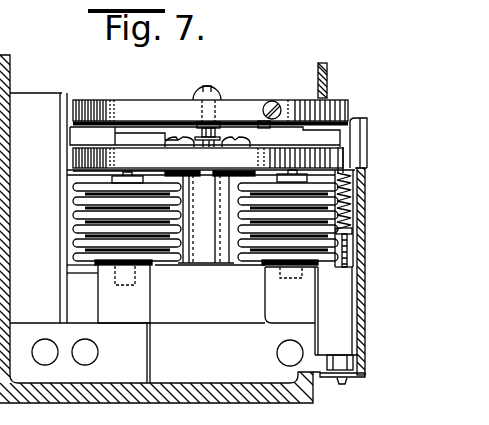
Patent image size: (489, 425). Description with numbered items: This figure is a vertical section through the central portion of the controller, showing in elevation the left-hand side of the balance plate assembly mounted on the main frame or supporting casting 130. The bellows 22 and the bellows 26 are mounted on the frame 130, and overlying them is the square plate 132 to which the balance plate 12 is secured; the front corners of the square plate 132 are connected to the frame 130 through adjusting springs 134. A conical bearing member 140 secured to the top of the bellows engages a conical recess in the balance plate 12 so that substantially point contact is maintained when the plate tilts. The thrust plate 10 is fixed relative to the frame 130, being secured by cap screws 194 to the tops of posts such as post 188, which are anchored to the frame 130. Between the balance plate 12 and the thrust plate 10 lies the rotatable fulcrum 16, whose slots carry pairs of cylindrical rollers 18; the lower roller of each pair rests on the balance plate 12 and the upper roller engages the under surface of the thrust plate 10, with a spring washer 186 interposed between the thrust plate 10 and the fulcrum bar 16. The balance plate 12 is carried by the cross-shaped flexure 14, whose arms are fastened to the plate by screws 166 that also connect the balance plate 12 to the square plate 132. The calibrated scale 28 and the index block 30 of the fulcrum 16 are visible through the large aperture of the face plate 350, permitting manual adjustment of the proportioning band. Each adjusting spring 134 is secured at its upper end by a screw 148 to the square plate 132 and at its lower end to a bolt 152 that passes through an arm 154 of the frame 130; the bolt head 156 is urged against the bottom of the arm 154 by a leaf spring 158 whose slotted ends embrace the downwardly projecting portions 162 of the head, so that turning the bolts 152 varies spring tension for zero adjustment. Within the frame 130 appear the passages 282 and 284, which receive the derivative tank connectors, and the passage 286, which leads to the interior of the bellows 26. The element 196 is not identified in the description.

The thrust plate 10 is at (92, 110).
The balance plate 12 is at (82, 155).
The flexure 14 is at (192, 152).
The rotatable fulcrum 16 is at (131, 122).
The cylindrical rollers 18 is at (88, 128).
The bellows 22 is at (150, 247).
The bellows 26 is at (273, 242).
The calibrated scale 28 is at (308, 107).
The index block 30 is at (357, 117).
The main frame 130 is at (3, 224).
The square plate 132 is at (83, 172).
The adjusting springs 134 is at (337, 198).
The conical bearing member 140 is at (128, 173).
The screw 148 is at (352, 158).
The bolt 152 is at (336, 259).
The arm 154 is at (327, 312).
The head 156 is at (335, 367).
The leaf spring 158 is at (347, 383).
The downwardly projecting portions 162 is at (332, 380).
The screws 166 is at (180, 122).
The spring washer 186 is at (230, 120).
The post 188 is at (207, 240).
The cap screws 194 is at (204, 93).
The screw 196 is at (274, 103).
The passage 282 is at (43, 342).
The passage 284 is at (86, 350).
The passage 286 is at (279, 352).
The face plate 350 is at (365, 40).